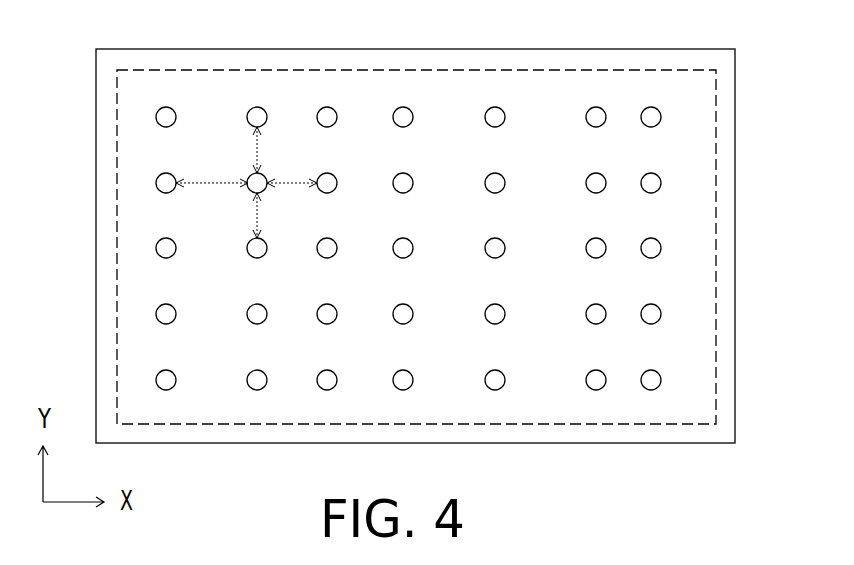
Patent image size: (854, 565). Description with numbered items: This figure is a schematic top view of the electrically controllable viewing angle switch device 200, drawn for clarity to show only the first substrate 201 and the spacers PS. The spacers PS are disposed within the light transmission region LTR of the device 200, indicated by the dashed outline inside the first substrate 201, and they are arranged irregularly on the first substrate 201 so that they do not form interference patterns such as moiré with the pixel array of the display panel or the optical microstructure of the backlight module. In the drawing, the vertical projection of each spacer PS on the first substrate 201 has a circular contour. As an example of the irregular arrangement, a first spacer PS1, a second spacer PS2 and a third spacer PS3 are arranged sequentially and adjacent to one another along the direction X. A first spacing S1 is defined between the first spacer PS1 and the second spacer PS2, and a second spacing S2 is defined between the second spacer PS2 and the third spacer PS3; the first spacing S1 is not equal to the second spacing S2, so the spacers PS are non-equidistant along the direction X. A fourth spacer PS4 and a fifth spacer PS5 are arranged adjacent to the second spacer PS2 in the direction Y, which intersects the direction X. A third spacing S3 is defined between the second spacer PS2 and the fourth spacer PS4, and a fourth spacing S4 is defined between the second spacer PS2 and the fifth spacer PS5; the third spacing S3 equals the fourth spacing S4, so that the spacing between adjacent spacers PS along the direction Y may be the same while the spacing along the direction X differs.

The electrically controllable viewing angle switch device 200 is at (780, 503).
The first substrate 201 is at (735, 362).
The light transmission region LTR is at (716, 110).
The spacer PS is at (656, 191).
The first spacer PS1 is at (156, 184).
The second spacer PS2 is at (264, 176).
The third spacer PS3 is at (334, 176).
The fourth spacer PS4 is at (250, 110).
The fifth spacer PS5 is at (249, 255).
The first spacing S1 is at (212, 171).
The second spacing S2 is at (292, 171).
The third spacing S3 is at (244, 150).
The fourth spacing S4 is at (244, 215).